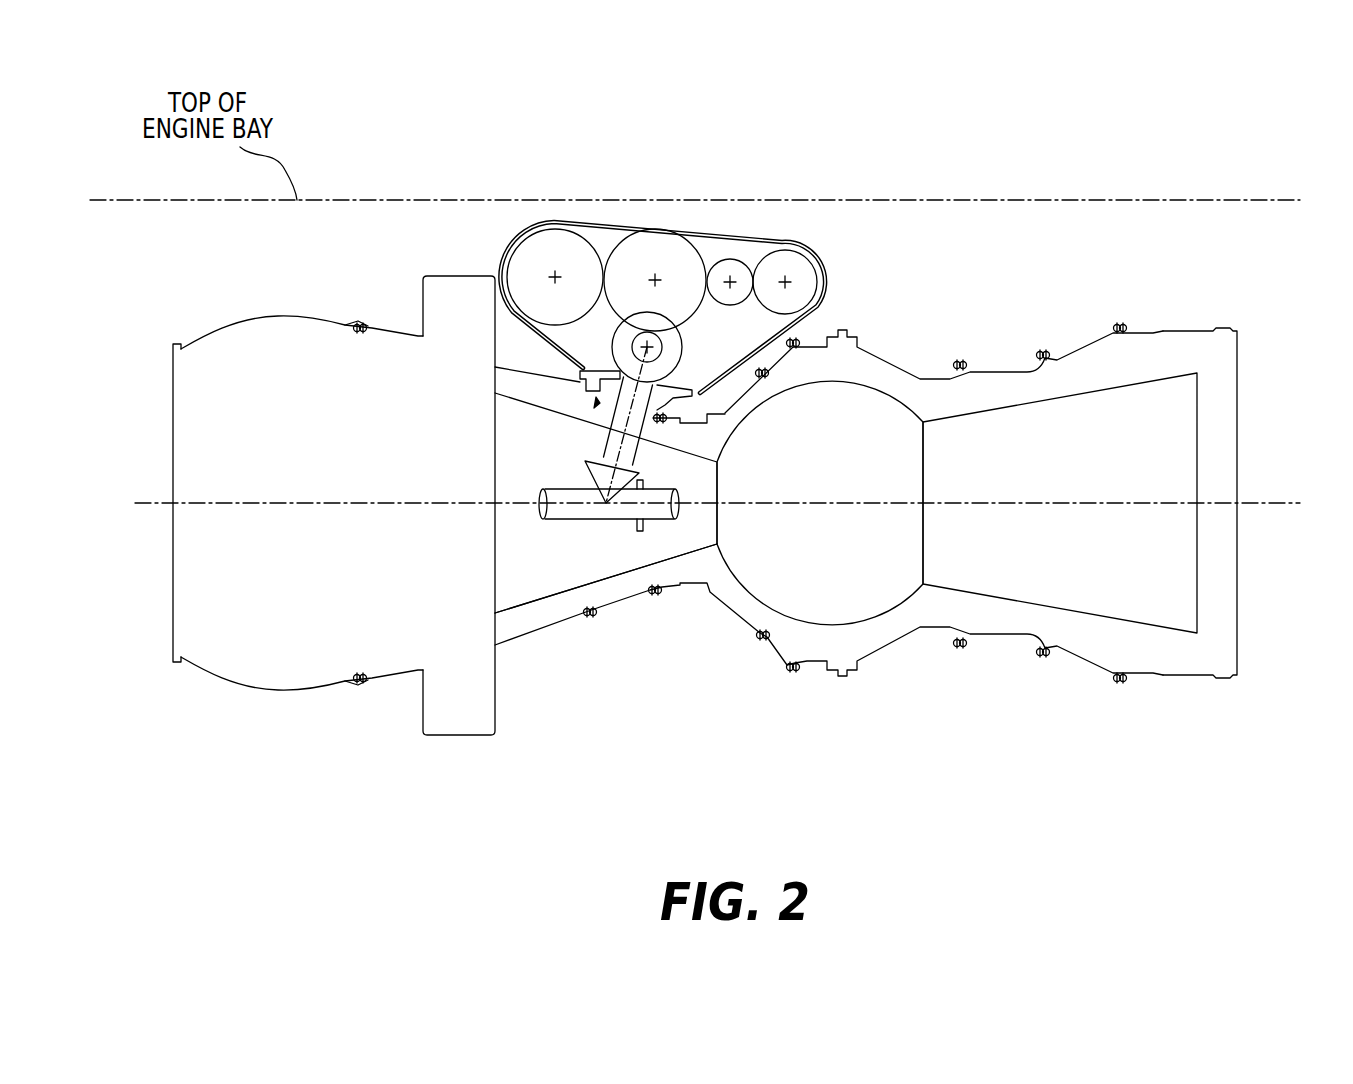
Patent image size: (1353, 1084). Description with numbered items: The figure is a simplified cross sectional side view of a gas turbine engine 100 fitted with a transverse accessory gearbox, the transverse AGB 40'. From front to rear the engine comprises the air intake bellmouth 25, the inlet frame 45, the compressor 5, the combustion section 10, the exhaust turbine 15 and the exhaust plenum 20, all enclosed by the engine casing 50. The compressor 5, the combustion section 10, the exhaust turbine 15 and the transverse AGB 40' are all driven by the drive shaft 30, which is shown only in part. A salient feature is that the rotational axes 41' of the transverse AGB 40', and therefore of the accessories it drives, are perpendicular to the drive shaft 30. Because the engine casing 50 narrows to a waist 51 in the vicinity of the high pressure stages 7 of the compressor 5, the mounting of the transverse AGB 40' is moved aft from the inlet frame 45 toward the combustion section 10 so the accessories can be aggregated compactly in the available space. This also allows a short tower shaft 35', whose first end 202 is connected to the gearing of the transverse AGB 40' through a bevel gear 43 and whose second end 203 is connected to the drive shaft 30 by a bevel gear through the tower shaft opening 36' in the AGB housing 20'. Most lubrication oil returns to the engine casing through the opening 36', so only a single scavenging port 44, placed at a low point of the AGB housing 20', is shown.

The gas turbine engine 100 is at (1000, 190).
The air intake bellmouth 25 is at (218, 338).
The inlet frame 45 is at (472, 320).
The compressor 5 is at (515, 492).
The high pressure stages 7 is at (625, 573).
The combustion section 10 is at (837, 493).
The exhaust turbine 15 is at (1093, 492).
The exhaust plenum 20 is at (1235, 499).
The engine casing 50 is at (897, 357).
The waist 51 is at (690, 585).
The scavenging port 44 is at (723, 408).
The tower shaft opening 36' is at (510, 395).
The first end 202 is at (583, 392).
The AGB housing 20' is at (706, 241).
The transverse AGB 40' is at (662, 268).
The rotational axes 41' is at (795, 261).
The bevel gear 43 is at (655, 382).
The tower shaft 35' is at (648, 425).
The second end 203 is at (602, 462).
The drive shaft 30 is at (567, 522).